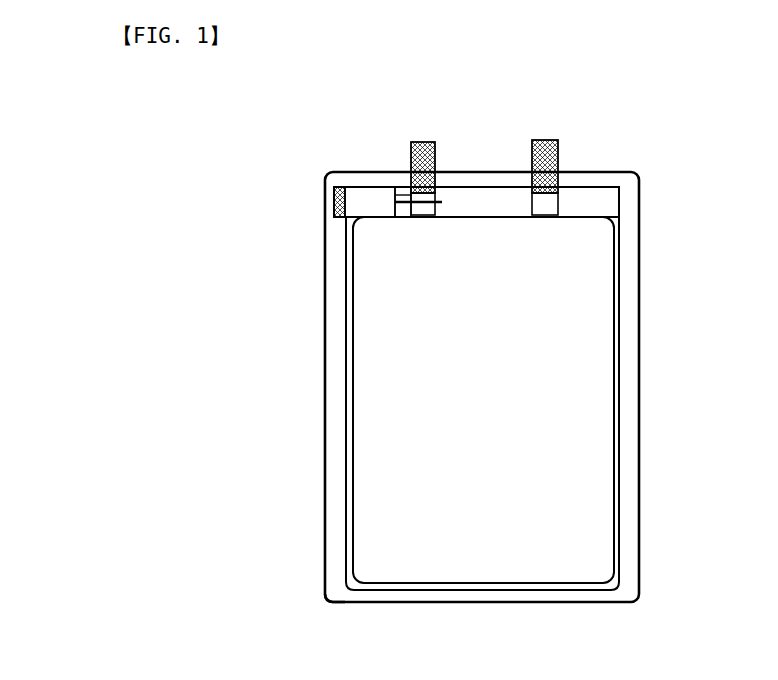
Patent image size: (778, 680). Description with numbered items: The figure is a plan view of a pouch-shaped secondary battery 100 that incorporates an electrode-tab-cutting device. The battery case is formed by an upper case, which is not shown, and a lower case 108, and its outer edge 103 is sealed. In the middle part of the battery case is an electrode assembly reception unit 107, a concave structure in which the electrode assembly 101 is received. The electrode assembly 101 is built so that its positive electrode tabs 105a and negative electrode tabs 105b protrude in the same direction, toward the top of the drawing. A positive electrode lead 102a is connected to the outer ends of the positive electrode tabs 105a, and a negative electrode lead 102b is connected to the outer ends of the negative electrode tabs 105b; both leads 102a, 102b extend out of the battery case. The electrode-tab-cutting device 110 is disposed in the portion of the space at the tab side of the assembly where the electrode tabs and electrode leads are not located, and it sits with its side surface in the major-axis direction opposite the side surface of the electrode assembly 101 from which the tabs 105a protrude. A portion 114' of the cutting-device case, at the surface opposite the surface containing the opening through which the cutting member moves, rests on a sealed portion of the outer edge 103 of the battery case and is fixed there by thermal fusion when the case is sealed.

The pouch-shaped secondary battery 100 is at (228, 110).
The electrode assembly 101 is at (353, 335).
The positive electrode lead 102a is at (427, 142).
The negative electrode lead 102b is at (548, 140).
The outer edge 103 is at (336, 306).
The positive electrode tabs 105a is at (435, 213).
The negative electrode tabs 105b is at (553, 203).
The electrode assembly reception unit 107 is at (356, 580).
The lower case 108 is at (284, 418).
The electrode-tab-cutting device 110 is at (375, 188).
The portion of the case 114' is at (297, 211).